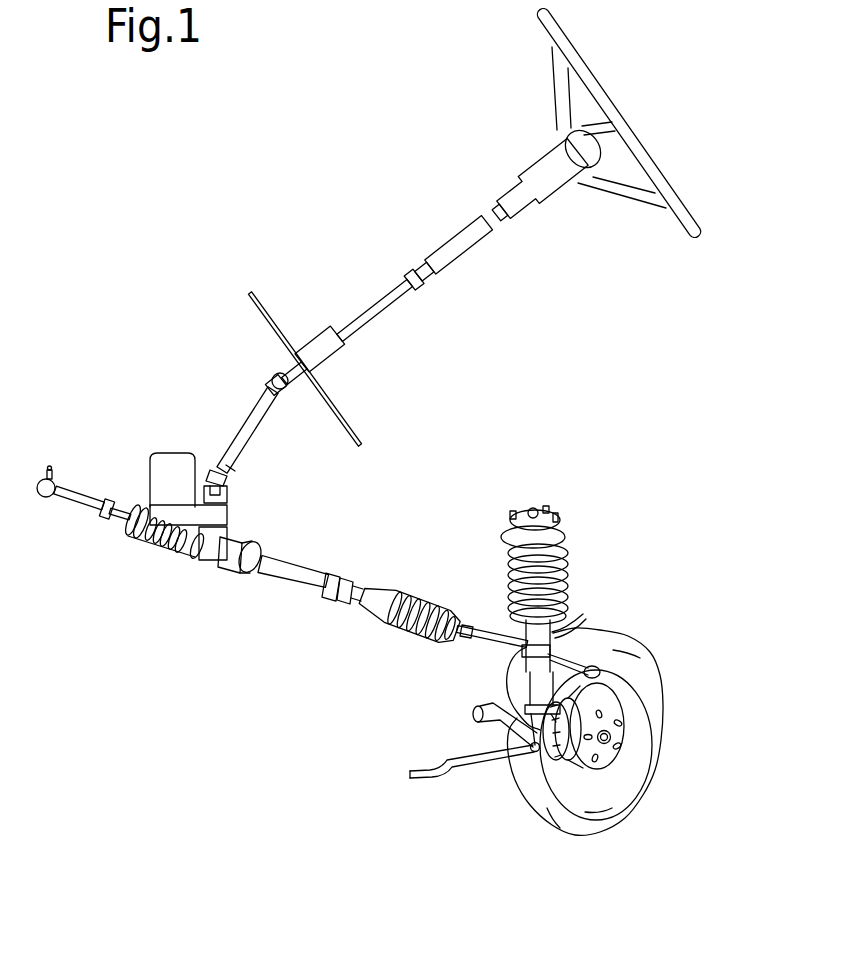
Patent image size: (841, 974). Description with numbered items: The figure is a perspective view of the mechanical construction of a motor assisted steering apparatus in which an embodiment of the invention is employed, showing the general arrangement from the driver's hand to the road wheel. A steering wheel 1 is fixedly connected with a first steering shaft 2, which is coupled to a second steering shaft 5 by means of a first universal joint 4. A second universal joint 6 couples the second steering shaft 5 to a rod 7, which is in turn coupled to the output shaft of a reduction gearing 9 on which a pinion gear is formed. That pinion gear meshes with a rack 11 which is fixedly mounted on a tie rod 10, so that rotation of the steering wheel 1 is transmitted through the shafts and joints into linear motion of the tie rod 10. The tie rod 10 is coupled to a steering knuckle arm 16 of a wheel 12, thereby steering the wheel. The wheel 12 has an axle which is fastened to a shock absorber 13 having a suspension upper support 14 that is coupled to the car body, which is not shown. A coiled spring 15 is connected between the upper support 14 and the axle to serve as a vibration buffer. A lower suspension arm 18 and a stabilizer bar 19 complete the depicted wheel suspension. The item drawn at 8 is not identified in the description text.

The steering wheel 1 is at (608, 92).
The first steering shaft 2 is at (503, 224).
The first universal joint 4 is at (270, 368).
The second steering shaft 5 is at (248, 422).
The second universal joint 6 is at (226, 491).
The rod 7 is at (206, 570).
The reservoir 8 is at (174, 450).
The reduction gearing 9 is at (145, 504).
The tie rod 10 is at (80, 503).
The rack 11 is at (175, 556).
The wheel 12 is at (588, 822).
The shock absorber 13 is at (548, 632).
The suspension upper support 14 is at (560, 522).
The coiled spring 15 is at (568, 575).
The steering knuckle arm 16 is at (600, 672).
The lower suspension arm 18 is at (497, 725).
The stabilizer bar 19 is at (468, 763).